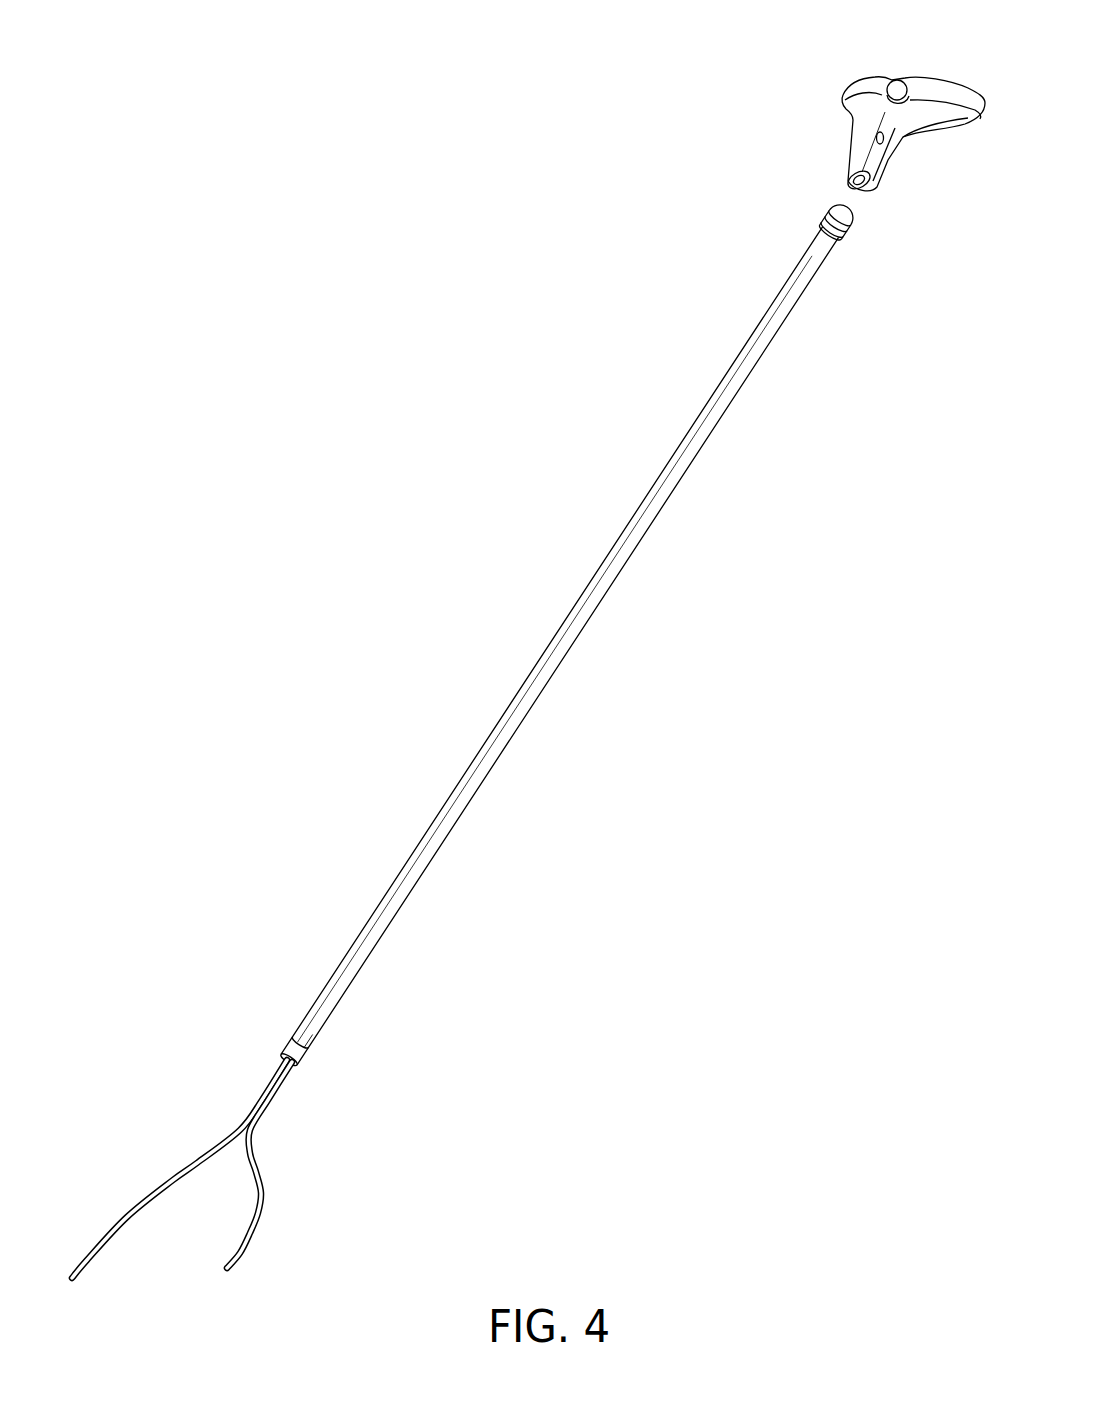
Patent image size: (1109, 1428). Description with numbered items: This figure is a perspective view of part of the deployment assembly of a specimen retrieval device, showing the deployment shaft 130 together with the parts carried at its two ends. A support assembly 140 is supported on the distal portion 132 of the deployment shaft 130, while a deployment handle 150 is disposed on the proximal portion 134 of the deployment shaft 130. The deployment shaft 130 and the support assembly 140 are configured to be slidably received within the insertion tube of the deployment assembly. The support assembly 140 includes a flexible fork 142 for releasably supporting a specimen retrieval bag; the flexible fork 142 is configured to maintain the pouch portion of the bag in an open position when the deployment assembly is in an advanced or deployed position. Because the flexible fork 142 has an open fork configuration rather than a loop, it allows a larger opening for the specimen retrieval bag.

The deployment shaft 130 is at (512, 598).
The distal portion of the deployment shaft 132 is at (318, 1033).
The proximal portion of the deployment shaft 134 is at (830, 245).
The support assembly 140 is at (182, 1164).
The flexible fork 142 is at (253, 1208).
The deployment handle 150 is at (815, 72).